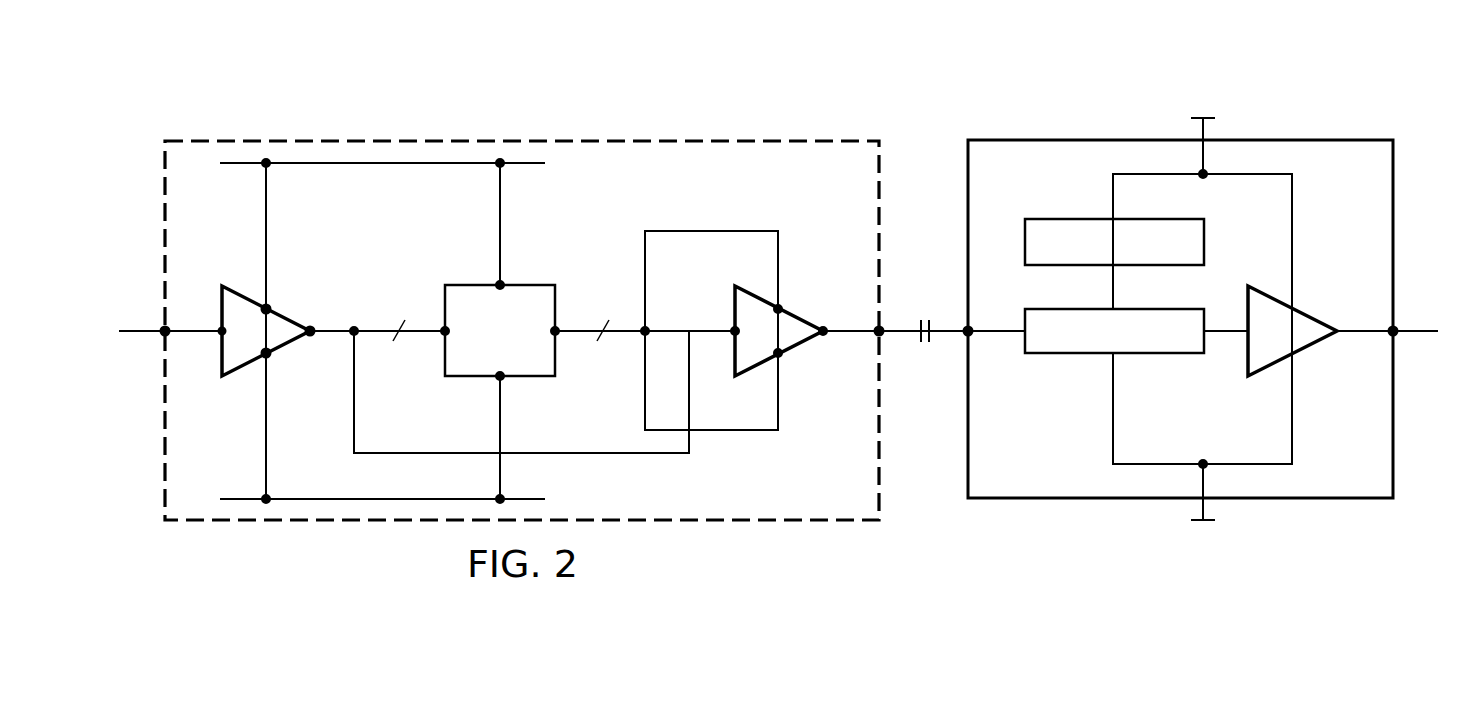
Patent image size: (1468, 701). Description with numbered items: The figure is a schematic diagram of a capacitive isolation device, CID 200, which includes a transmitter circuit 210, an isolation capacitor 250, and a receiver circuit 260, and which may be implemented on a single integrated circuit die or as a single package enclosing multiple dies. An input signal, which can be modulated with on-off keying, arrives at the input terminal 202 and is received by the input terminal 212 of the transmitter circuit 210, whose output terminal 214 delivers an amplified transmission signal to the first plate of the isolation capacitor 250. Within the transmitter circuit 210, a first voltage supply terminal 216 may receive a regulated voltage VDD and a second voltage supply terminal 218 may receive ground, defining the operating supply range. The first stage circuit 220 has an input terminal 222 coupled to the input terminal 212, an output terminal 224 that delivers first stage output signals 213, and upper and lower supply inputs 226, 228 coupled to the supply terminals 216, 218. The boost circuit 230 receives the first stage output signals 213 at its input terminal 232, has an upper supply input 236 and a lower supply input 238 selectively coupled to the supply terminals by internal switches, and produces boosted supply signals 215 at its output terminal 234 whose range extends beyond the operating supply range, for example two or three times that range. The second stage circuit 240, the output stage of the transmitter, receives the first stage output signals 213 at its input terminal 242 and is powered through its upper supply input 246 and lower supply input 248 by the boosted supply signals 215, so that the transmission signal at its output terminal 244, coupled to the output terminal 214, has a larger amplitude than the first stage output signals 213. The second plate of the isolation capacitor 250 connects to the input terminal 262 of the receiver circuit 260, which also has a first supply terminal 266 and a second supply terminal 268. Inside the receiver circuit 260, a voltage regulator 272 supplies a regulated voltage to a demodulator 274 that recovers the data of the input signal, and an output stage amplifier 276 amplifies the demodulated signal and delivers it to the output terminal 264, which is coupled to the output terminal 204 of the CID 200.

The capacitive isolation device (CID) 200 is at (548, 104).
The input terminal 202 is at (142, 328).
The output terminal 204 is at (1415, 327).
The transmitter circuit 210 is at (337, 140).
The input terminal 212 is at (158, 336).
The first stage output signals 213 is at (418, 326).
The output terminal 214 is at (888, 337).
The boosted supply signals 215 is at (622, 327).
The first voltage supply terminal 216 is at (377, 166).
The second voltage supply terminal 218 is at (320, 497).
The first stage circuit 220 is at (287, 350).
The input terminal 222 is at (215, 329).
The output terminal 224 is at (311, 327).
The upper supply input 226 is at (270, 306).
The lower supply input 228 is at (262, 357).
The boost circuit 230 is at (535, 284).
The input terminal 232 is at (440, 336).
The output terminal 234 is at (565, 335).
The upper supply input 236 is at (497, 283).
The lower supply input 238 is at (497, 380).
The second stage circuit 240 is at (800, 350).
The input terminal 242 is at (730, 328).
The output terminal 244 is at (823, 325).
The upper supply input 246 is at (782, 306).
The lower supply input 248 is at (776, 357).
The isolation capacitor 250 is at (925, 318).
The receiver circuit 260 is at (1283, 140).
The input terminal 262 is at (975, 340).
The output terminal 264 is at (1385, 338).
The first supply terminal 266 is at (1211, 116).
The second supply terminal 268 is at (1210, 524).
The voltage regulator 272 is at (1206, 242).
The demodulator 274 is at (1150, 355).
The output stage amplifier 276 is at (1318, 322).